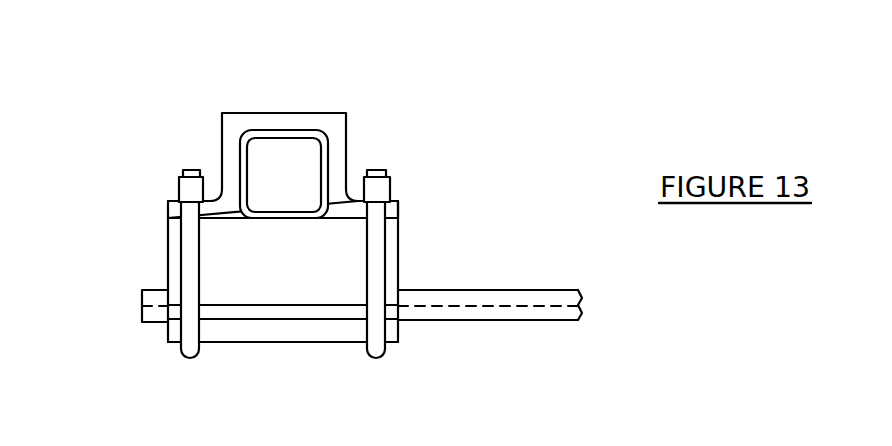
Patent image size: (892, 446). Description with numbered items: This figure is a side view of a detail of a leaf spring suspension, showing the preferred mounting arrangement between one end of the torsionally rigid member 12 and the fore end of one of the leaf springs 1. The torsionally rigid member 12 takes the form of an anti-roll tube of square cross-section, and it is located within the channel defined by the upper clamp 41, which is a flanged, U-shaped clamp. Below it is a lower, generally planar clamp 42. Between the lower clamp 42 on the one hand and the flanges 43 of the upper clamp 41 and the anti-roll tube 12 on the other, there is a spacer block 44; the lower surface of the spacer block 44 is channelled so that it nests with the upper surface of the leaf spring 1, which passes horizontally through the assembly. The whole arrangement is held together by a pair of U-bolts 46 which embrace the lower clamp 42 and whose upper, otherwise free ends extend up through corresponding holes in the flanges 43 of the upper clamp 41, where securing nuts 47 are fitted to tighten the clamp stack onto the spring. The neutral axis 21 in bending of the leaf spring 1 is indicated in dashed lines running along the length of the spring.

The leaf spring 1 is at (478, 300).
The neutral axis 21 is at (522, 305).
The torsionally rigid member 12 is at (298, 138).
The upper clamp 41 is at (233, 157).
The lower clamp 42 is at (274, 328).
The flanges 43 is at (181, 211).
The spacer block 44 is at (296, 282).
The U-bolts 46 is at (186, 352).
The securing nuts 47 is at (197, 187).